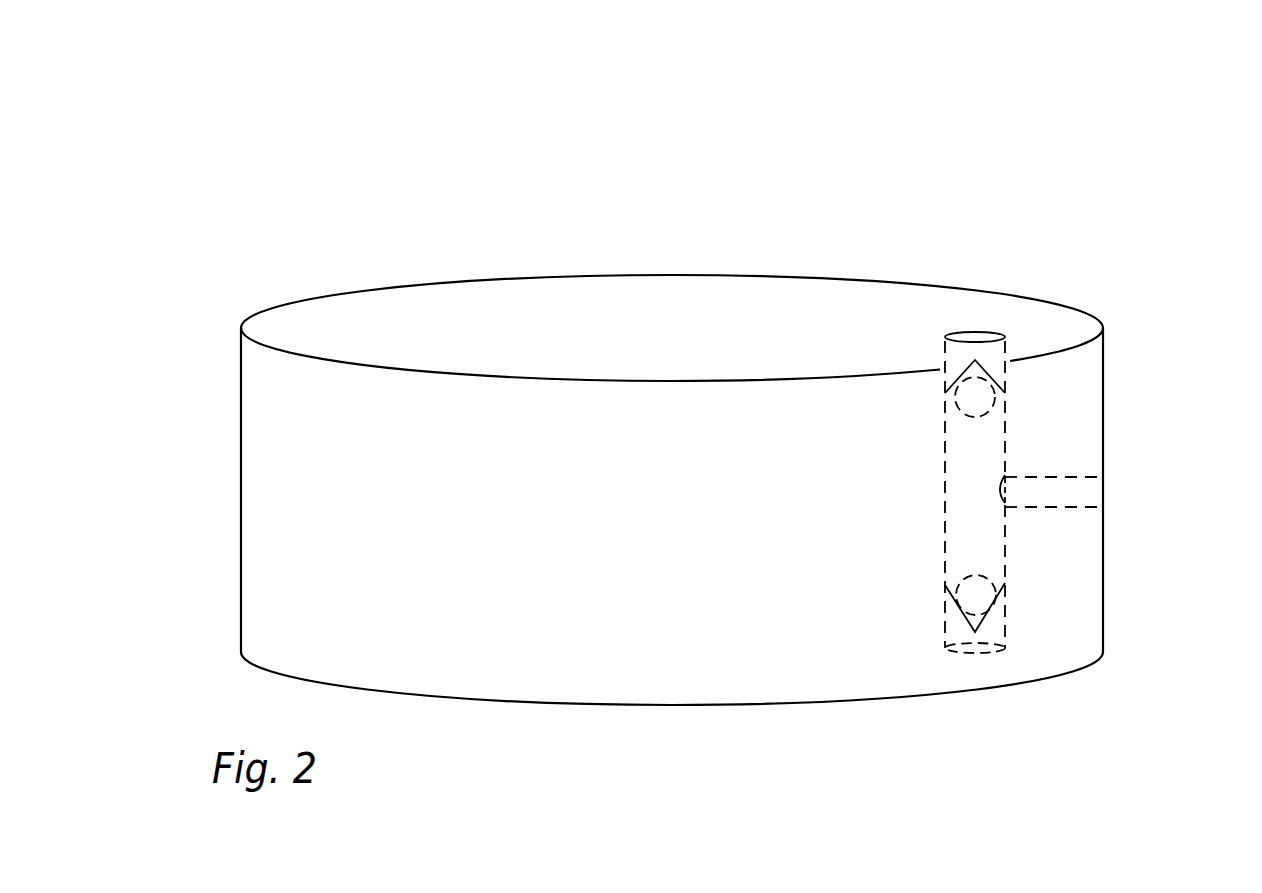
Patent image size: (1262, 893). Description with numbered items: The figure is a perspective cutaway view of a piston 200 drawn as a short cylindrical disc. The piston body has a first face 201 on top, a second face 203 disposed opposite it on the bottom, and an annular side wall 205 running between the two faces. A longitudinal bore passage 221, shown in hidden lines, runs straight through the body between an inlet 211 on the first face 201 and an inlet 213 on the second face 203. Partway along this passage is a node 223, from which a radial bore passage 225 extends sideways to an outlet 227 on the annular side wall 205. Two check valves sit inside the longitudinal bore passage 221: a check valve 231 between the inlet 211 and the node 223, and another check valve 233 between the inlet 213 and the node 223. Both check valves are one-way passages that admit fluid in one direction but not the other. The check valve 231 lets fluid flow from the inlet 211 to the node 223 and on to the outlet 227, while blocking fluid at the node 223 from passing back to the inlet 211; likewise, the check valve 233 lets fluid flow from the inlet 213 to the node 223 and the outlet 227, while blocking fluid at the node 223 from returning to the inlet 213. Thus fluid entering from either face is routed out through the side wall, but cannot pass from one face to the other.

The piston 200 is at (1033, 164).
The first face 201 is at (432, 332).
The second face 203 is at (650, 705).
The annular side wall 205 is at (238, 502).
The inlet 211 is at (970, 332).
The inlet 213 is at (975, 652).
The longitudinal bore passage 221 is at (941, 428).
The node 223 is at (1005, 471).
The radial bore passage 225 is at (1040, 508).
The outlet 227 is at (1105, 490).
The check valve 231 is at (1007, 413).
The check valve 233 is at (950, 592).